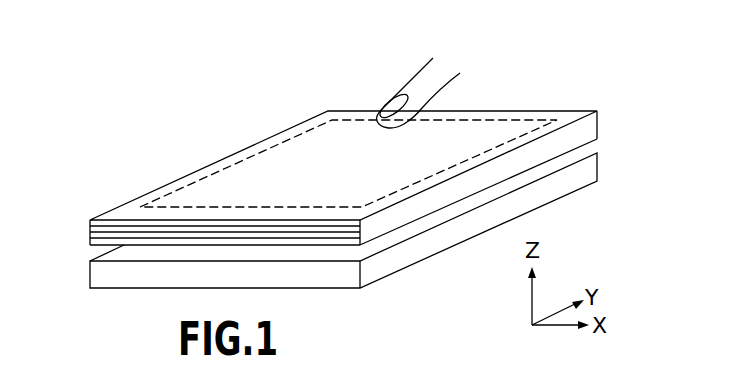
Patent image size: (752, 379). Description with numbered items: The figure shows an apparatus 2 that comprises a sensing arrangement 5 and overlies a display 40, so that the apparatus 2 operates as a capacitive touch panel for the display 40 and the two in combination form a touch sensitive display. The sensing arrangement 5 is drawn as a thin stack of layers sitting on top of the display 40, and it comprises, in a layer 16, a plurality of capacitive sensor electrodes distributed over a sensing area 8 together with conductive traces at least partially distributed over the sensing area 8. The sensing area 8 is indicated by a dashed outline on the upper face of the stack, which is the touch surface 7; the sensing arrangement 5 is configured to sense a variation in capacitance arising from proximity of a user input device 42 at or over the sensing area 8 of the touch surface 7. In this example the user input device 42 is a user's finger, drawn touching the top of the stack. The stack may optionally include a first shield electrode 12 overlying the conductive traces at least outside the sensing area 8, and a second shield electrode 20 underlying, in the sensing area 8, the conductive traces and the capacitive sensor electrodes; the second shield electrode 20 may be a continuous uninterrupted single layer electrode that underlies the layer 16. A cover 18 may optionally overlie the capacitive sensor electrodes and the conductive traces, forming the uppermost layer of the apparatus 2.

The apparatus 2 is at (104, 121).
The sensing arrangement 5 is at (600, 120).
The touch surface 7 is at (549, 119).
The sensing area 8 is at (265, 157).
The first shield electrode 12 is at (90, 229).
The layer 16 is at (90, 235).
The cover 18 is at (90, 223).
The second shield electrode 20 is at (90, 242).
The display 40 is at (600, 163).
The user input device 42 is at (423, 71).